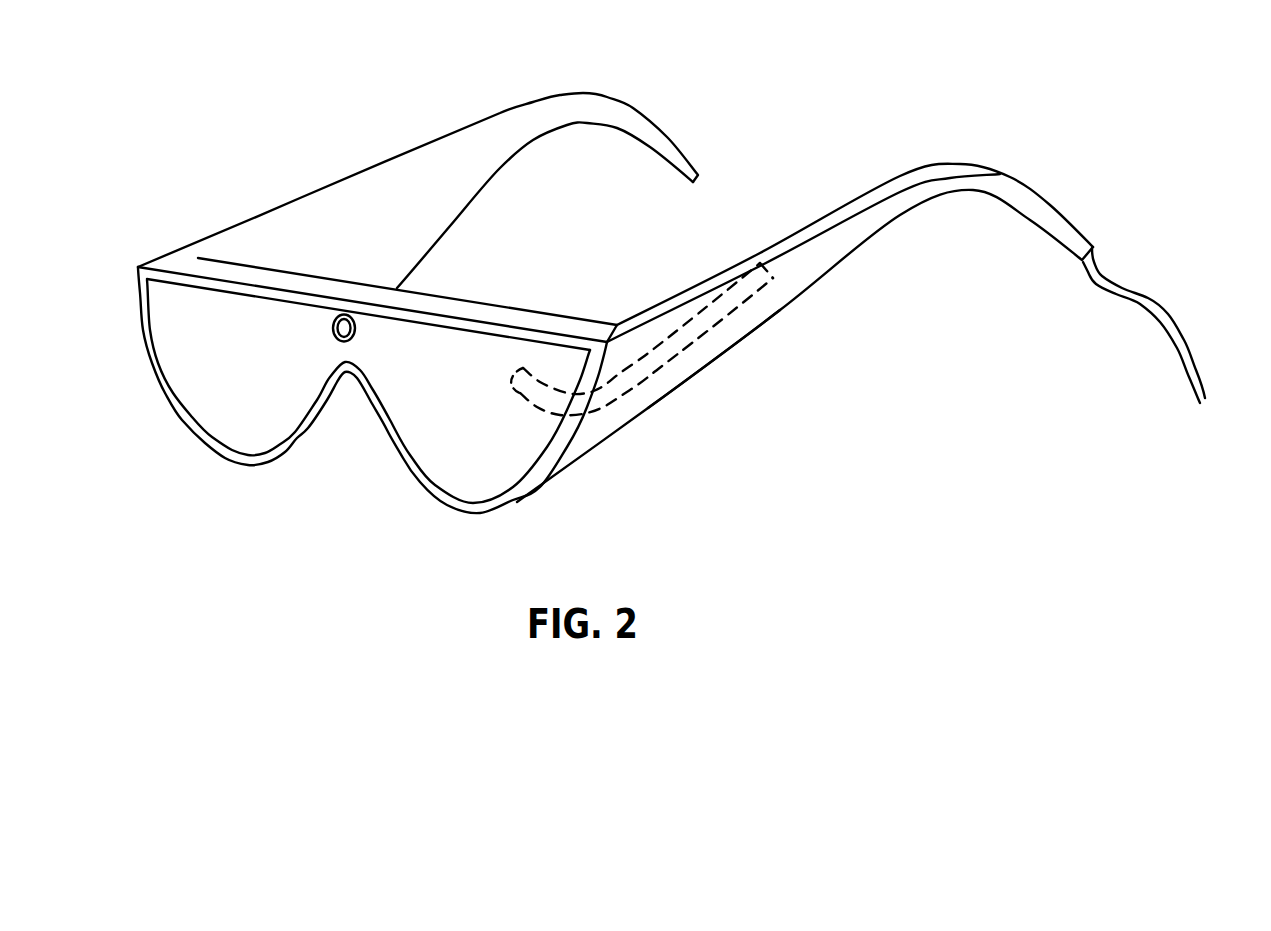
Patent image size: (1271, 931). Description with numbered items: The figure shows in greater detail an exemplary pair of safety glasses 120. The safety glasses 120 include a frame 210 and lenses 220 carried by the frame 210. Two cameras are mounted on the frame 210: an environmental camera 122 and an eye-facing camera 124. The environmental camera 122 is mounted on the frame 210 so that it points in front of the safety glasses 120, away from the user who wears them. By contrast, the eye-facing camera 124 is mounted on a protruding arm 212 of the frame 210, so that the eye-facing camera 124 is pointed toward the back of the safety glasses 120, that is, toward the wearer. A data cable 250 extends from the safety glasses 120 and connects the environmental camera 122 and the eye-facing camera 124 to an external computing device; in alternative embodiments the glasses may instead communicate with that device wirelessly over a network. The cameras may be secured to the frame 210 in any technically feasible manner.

The safety glasses 120 is at (687, 306).
The environmental camera 122 is at (335, 342).
The eye-facing camera 124 is at (510, 373).
The frame 210 is at (807, 287).
The protruding arm 212 is at (688, 349).
The lenses 220 is at (190, 398).
The data cable 250 is at (1143, 287).